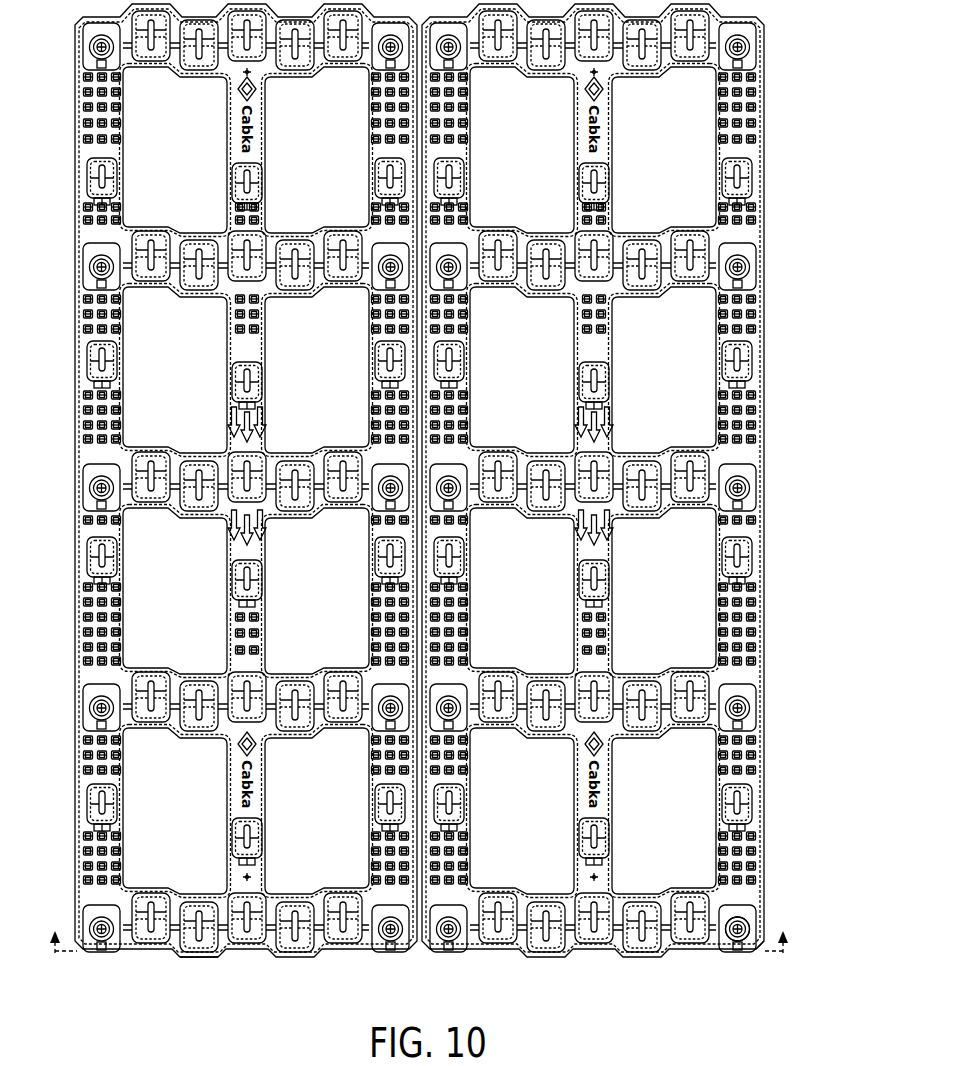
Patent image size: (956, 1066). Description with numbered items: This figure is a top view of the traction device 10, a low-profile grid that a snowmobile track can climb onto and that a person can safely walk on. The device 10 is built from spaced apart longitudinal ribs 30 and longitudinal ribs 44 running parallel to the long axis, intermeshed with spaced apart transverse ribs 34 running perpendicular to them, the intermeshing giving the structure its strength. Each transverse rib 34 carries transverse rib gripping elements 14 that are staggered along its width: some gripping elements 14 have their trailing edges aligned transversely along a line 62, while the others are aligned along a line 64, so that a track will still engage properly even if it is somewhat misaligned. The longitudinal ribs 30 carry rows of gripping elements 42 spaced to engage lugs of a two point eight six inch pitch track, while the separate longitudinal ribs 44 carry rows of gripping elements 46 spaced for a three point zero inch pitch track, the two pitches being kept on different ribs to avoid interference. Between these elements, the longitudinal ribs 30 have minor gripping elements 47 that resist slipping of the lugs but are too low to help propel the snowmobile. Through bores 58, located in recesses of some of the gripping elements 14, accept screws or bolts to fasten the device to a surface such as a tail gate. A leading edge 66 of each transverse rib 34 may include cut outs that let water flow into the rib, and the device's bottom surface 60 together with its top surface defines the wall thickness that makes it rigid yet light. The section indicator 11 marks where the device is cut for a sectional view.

The traction device 10 is at (777, 606).
The section line 11 is at (419, 920).
The transverse rib gripping elements 14 is at (207, 912).
The longitudinal ribs 30 is at (128, 95).
The transverse ribs 34 is at (555, 75).
The gripping elements 42 is at (125, 168).
The longitudinal ribs 44 is at (270, 92).
The gripping elements 46 is at (238, 193).
The minor gripping elements 47 is at (605, 643).
The through bores 58 is at (752, 47).
The bottom surface 60 is at (268, 432).
The line 62 is at (760, 928).
The line 64 is at (766, 892).
The leading edge 66 is at (203, 962).